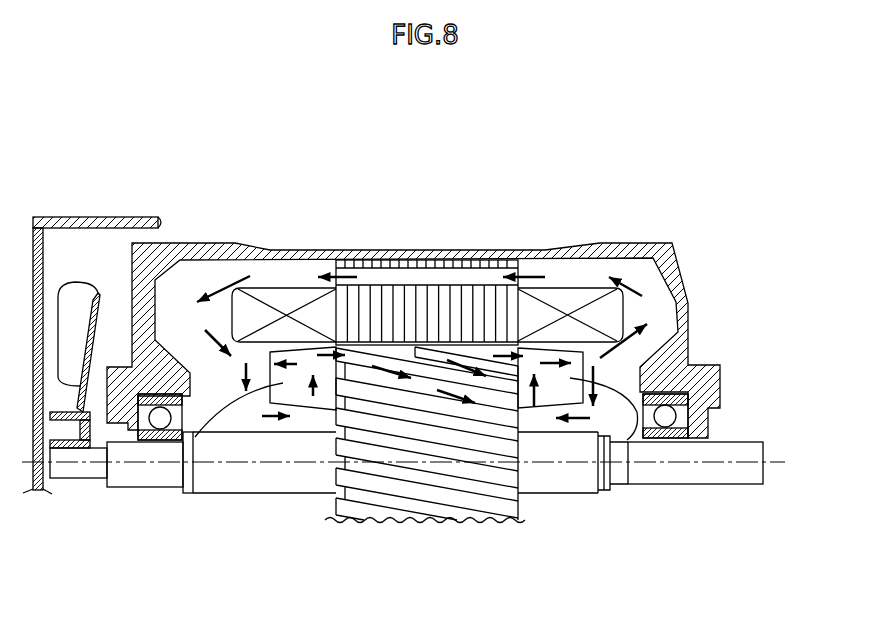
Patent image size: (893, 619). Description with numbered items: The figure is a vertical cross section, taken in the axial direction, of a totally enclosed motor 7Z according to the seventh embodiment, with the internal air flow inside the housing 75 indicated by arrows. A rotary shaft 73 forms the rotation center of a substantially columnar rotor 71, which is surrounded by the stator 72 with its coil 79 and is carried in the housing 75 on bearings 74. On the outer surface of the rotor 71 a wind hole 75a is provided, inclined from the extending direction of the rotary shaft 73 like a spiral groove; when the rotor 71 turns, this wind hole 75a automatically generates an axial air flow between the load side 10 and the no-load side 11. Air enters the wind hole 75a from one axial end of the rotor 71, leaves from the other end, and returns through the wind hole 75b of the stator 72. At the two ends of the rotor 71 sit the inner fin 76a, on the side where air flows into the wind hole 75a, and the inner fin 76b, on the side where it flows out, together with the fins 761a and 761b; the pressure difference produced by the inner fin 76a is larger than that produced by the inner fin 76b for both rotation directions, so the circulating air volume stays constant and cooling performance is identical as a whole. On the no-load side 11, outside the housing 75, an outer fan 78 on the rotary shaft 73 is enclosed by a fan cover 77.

The Outer fan 78 is at (75, 305).
The Fan cover 77 is at (117, 217).
The no-load side 11 is at (176, 297).
The Coil 79 is at (320, 317).
The stator 72 is at (425, 262).
The wind hole 75b is at (489, 272).
The load side 10 is at (640, 255).
The totally enclosed motor 7Z is at (745, 250).
The housing 75 is at (686, 286).
The Bearing 74 is at (672, 418).
The rotary shaft 73 is at (718, 477).
The Fin 761a is at (624, 440).
The inner fin 76a is at (547, 414).
The rotor 71 is at (463, 447).
The wind hole 75a is at (402, 449).
The inner fin 76b is at (302, 415).
The Fin 761b is at (222, 440).